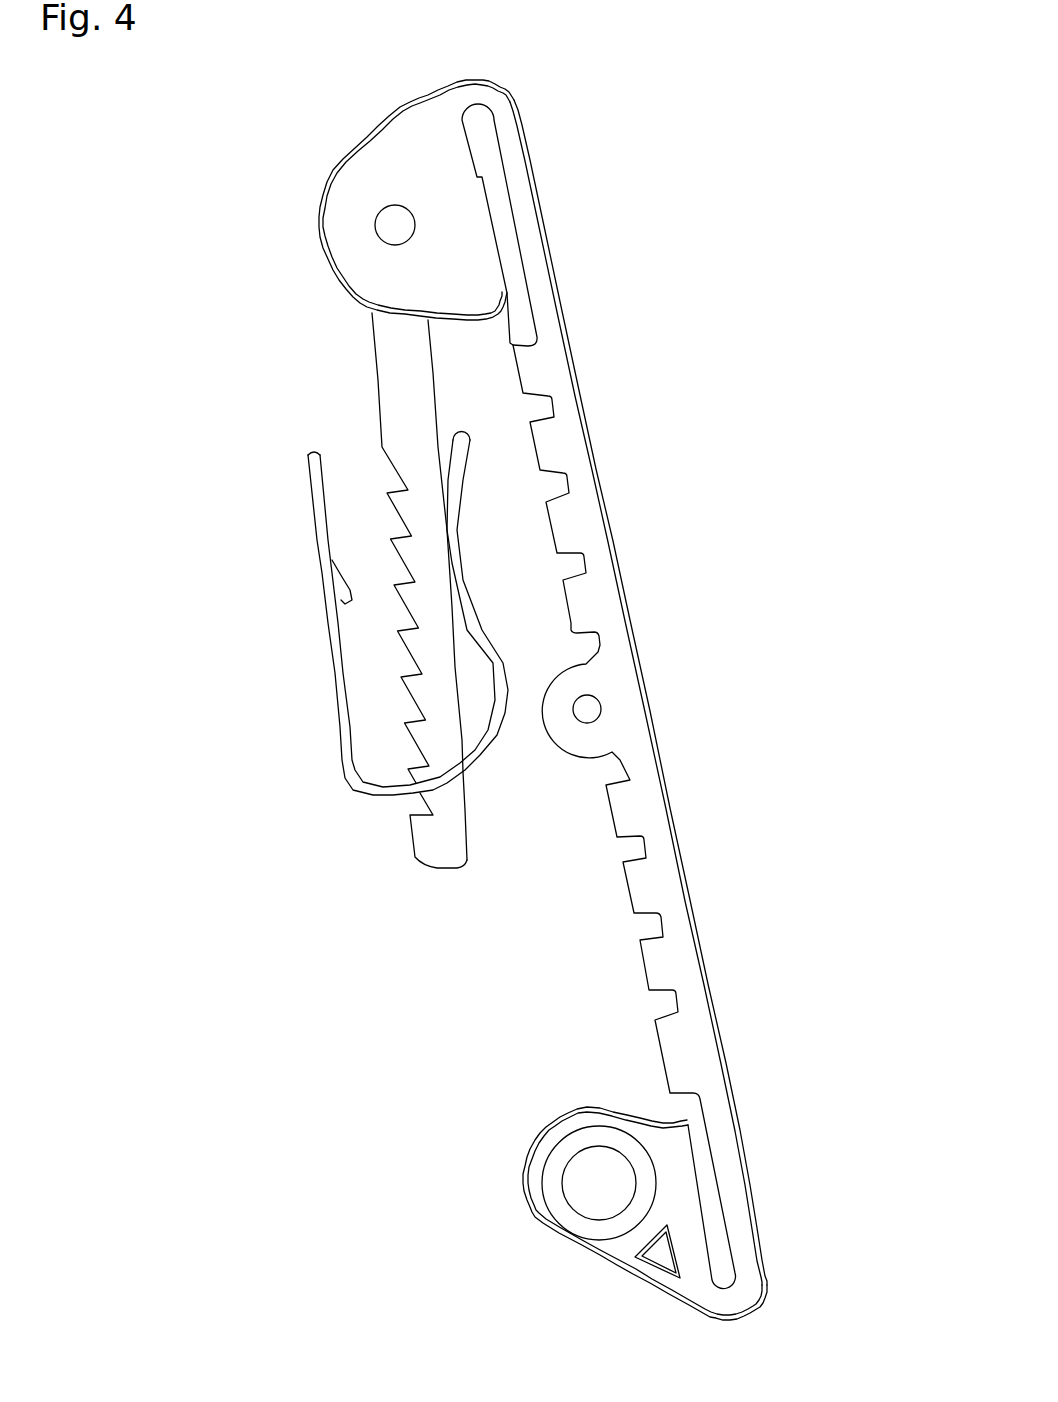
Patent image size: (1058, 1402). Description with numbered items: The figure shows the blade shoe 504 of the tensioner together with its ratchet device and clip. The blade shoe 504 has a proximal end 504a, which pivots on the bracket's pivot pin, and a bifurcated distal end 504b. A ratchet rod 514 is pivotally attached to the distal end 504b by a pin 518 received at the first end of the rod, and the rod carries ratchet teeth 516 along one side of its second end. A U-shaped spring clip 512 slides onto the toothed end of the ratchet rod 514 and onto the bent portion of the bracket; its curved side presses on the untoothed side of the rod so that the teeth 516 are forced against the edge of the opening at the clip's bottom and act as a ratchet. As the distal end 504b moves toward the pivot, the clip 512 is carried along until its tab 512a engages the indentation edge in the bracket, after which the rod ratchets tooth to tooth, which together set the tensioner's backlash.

The blade shoe 504 is at (628, 720).
The proximal end 504a is at (745, 1300).
The distal end 504b is at (415, 152).
The U-shaped spring clip 512 is at (348, 697).
The tab 512a is at (343, 590).
The ratchet rod 514 is at (437, 848).
The ratchet teeth 516 is at (400, 515).
The pin 518 is at (380, 228).